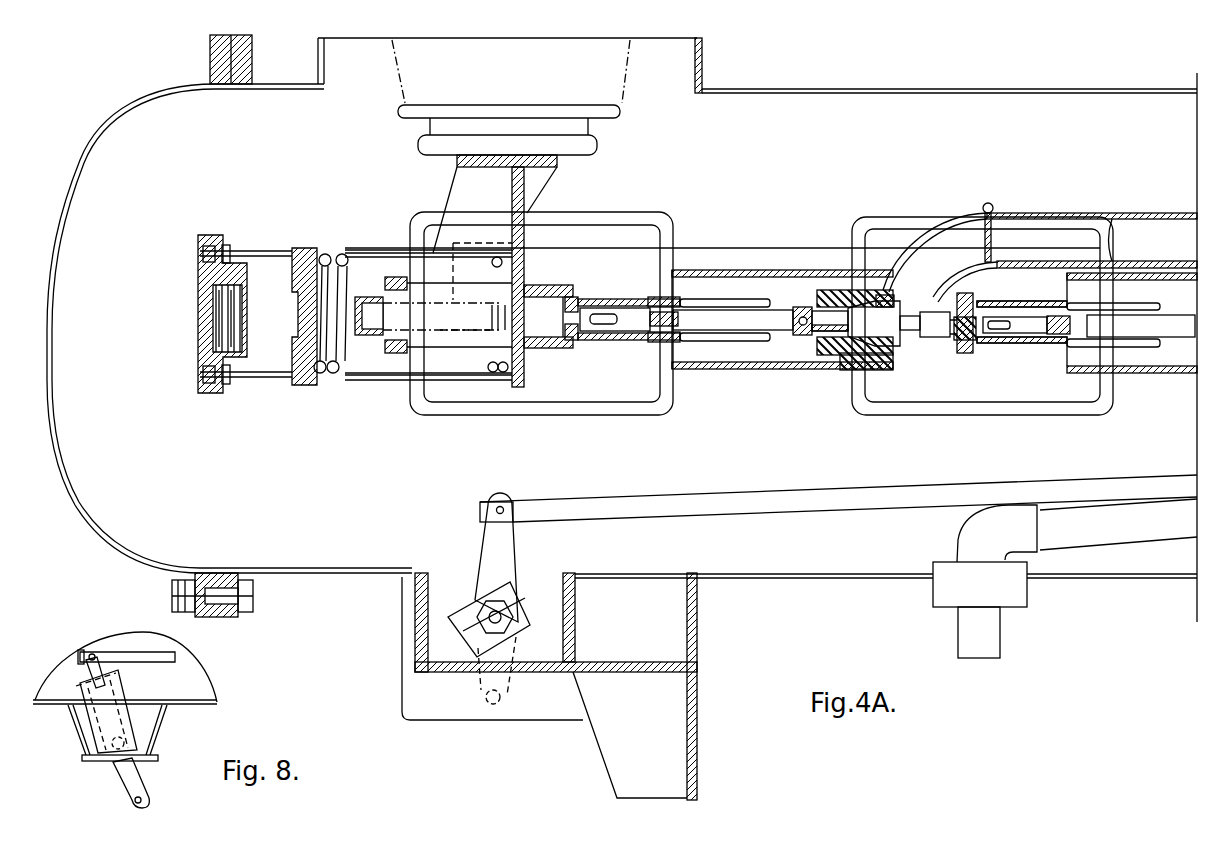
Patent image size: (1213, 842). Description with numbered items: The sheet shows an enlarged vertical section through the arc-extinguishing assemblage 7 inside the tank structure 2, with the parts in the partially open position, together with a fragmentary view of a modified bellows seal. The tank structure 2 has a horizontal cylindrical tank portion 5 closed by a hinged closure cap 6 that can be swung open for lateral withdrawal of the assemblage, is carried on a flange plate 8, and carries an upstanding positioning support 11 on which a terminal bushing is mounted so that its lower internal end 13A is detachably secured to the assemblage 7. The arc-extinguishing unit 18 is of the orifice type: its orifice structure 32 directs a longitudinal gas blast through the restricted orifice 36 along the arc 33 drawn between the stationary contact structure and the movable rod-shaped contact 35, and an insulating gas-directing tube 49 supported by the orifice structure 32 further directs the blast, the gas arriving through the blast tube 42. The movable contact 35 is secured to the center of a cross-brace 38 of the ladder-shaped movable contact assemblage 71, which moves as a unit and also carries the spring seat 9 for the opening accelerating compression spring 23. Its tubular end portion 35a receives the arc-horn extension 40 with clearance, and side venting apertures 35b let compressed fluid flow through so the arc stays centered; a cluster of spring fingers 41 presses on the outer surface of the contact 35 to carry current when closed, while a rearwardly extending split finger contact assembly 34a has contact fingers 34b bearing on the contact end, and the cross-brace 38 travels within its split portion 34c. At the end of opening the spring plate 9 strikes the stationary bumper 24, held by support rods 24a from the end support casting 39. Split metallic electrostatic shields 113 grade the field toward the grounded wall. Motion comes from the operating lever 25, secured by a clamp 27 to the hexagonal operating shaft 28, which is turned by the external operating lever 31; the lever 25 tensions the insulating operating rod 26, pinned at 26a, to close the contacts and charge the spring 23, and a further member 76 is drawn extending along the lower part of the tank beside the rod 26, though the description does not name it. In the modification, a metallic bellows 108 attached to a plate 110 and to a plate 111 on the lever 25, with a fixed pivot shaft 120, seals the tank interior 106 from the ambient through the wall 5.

In FIG. 4A, the tank structure 2 is at (840, 581).
In FIG. 8, the tank structure 2 is at (205, 706).
In FIG. 4A, the cylindrical tank portion 5 is at (1078, 582).
In FIG. 8, the cylindrical tank portion 5 is at (50, 705).
In FIG. 4A, the hinged closure cap 6 is at (66, 200).
In FIG. 4A, the arc-extinguishing assemblage 7 is at (1138, 174).
In FIG. 4A, the flange plate 8 is at (698, 720).
In FIG. 4A, the spring seat 9 is at (298, 328).
In FIG. 4A, the positioning support 11 is at (703, 60).
In FIG. 4A, the lower internal end of terminal bushing 13A is at (597, 150).
In FIG. 4A, the arc-extinguishing unit 18 is at (960, 392).
In FIG. 4A, the opening accelerating compression spring 23 is at (341, 254).
In FIG. 4A, the stationary bumper 24 is at (247, 307).
In FIG. 4A, the stationary support rod 24a is at (250, 252).
In FIG. 4A, the operating lever 25 is at (480, 545).
In FIG. 8, the operating lever 25 is at (100, 656).
In FIG. 4A, the insulating operating rod 26 is at (803, 508).
In FIG. 4A, the pin connection 26a is at (500, 505).
In FIG. 4A, the clamp 27 is at (460, 613).
In FIG. 4A, the hexagonal operating shaft 28 is at (512, 612).
In FIG. 4A, the externally extending operating lever 31 is at (485, 697).
In FIG. 4A, the orifice structure 32 is at (828, 290).
In FIG. 4A, the arc 33 is at (882, 297).
In FIG. 4A, the split finger contact assembly 34a is at (1014, 301).
In FIG. 4A, the contact finger 34b is at (728, 306).
In FIG. 4A, the split portion 34c is at (616, 322).
In FIG. 4A, the movable rod-shaped contact 35 is at (746, 332).
In FIG. 4A, the tubular end portion 35a is at (823, 325).
In FIG. 4A, the side venting aperture 35b is at (806, 315).
In FIG. 4A, the restricted orifice 36 is at (880, 370).
In FIG. 4A, the cross-brace 38 is at (655, 300).
In FIG. 4A, the end support casting 39 is at (452, 196).
In FIG. 4A, the arc-horn extension 40 is at (908, 333).
In FIG. 4A, the spring finger 41 is at (930, 306).
In FIG. 4A, the blast tube 42 is at (1060, 214).
In FIG. 4A, the insulating gas-directing tube 49 is at (748, 370).
In FIG. 4A, the movable contact assemblage 71 is at (704, 328).
In FIG. 4A, the tube 76 is at (1133, 532).
In FIG. 4A, the interior of tank structure 106 is at (706, 479).
In FIG. 8, the interior of tank structure 106 is at (210, 692).
In FIG. 8, the metallic bellows 108 is at (124, 681).
In FIG. 8, the plate 110 is at (152, 762).
In FIG. 8, the plate 111 is at (84, 684).
In FIG. 4A, the electrostatic shield 113 is at (590, 218).
In FIG. 8, the fixed pivot shaft 120 is at (120, 760).